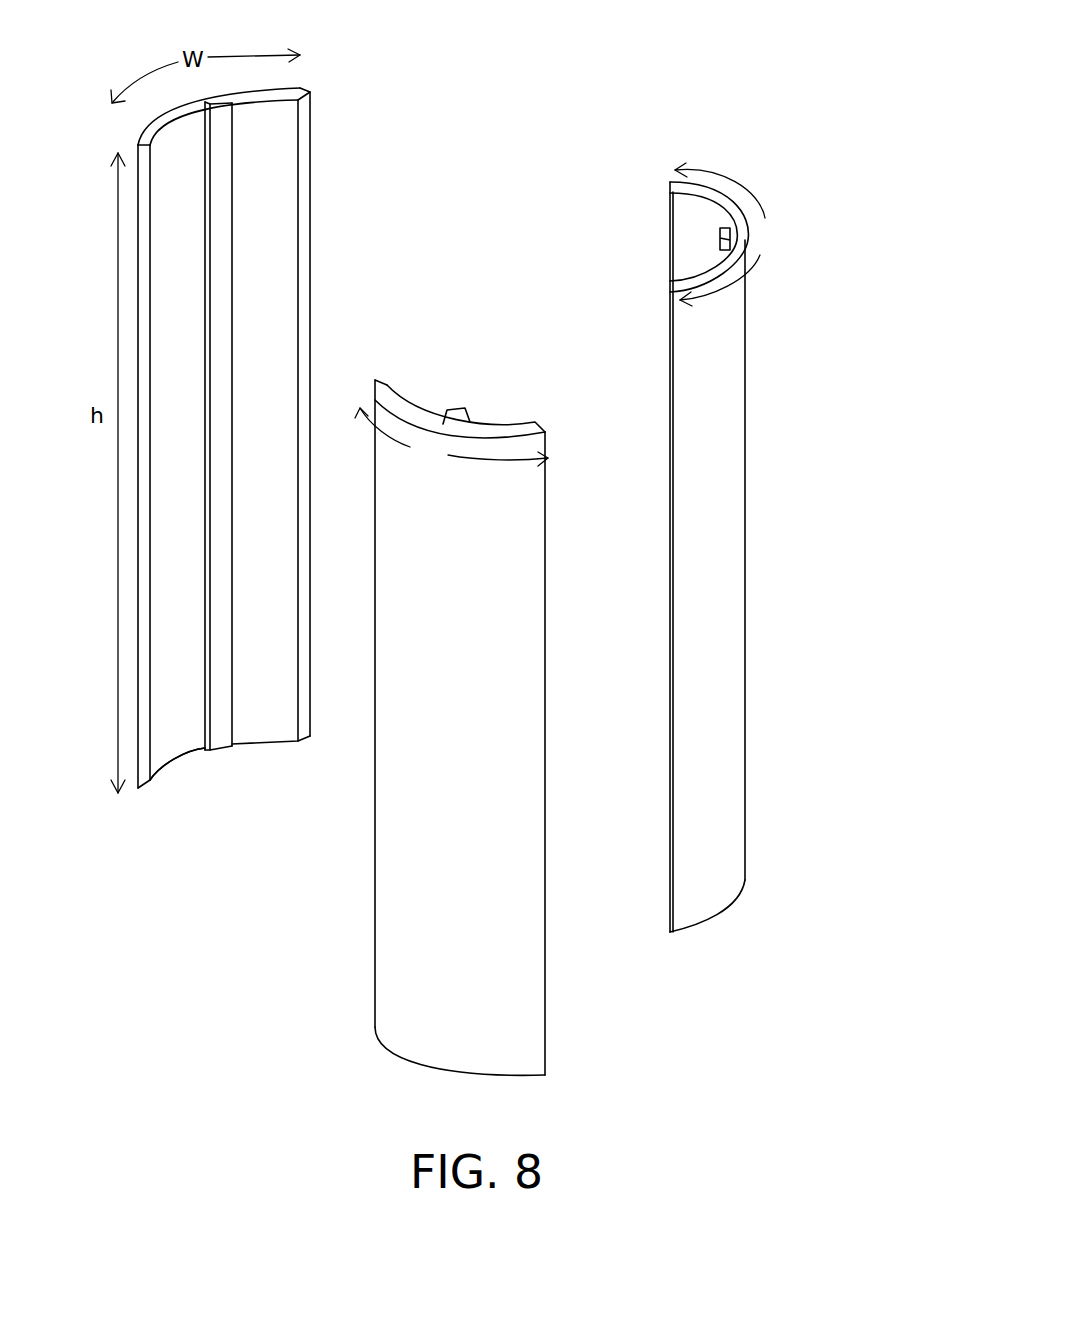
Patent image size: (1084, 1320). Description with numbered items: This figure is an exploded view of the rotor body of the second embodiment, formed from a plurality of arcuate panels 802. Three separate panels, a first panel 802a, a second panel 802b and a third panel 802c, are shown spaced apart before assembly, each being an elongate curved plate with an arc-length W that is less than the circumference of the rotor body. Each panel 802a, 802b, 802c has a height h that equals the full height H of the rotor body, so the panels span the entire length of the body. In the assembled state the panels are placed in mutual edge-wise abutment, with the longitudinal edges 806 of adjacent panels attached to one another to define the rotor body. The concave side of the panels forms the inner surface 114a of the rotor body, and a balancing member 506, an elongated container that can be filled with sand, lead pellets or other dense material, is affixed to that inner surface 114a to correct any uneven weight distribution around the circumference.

The arcuate panels 802 is at (518, 581).
The arcuate panel 802a is at (732, 405).
The arcuate panel 802b is at (532, 505).
The arcuate panel 802c is at (315, 448).
The longitudinal edges 806 is at (310, 210).
The balancing member 506 is at (222, 157).
The inner surface 114a is at (250, 722).